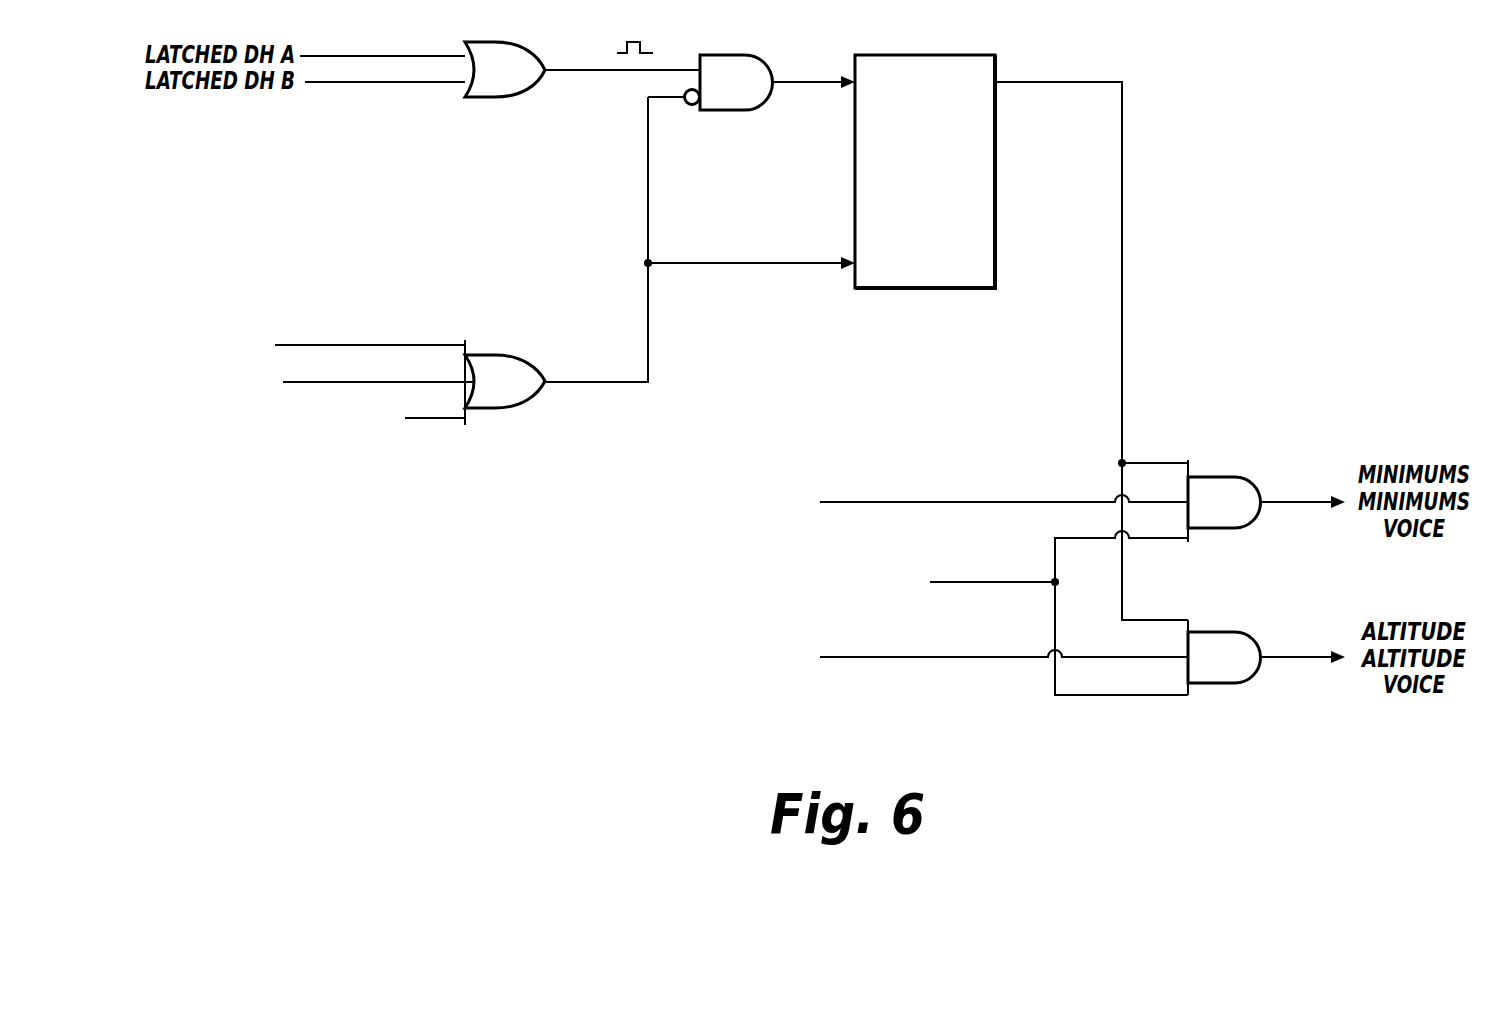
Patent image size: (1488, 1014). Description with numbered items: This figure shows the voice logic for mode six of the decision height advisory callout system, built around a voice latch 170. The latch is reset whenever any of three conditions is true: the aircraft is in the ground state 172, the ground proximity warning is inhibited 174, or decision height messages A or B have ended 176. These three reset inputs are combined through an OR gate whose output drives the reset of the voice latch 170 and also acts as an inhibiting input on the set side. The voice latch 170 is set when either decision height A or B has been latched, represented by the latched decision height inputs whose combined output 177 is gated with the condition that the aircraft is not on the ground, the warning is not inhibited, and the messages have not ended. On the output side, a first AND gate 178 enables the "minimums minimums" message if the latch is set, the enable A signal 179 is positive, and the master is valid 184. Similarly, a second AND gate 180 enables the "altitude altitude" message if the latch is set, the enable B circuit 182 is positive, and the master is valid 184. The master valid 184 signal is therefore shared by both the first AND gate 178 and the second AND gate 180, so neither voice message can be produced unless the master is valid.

The voice latch 170 is at (940, 289).
The ground state 172 is at (372, 345).
The ground proximity warning inhibited 174 is at (378, 382).
The decision height messages A or B ended 176 is at (436, 418).
The OR gate output pulse 177 is at (588, 70).
The first AND gate 178 is at (1237, 477).
The enable A input 179 is at (968, 502).
The second AND gate 180 is at (1237, 632).
The enable B circuit 182 is at (933, 657).
The master valid 184 is at (993, 582).